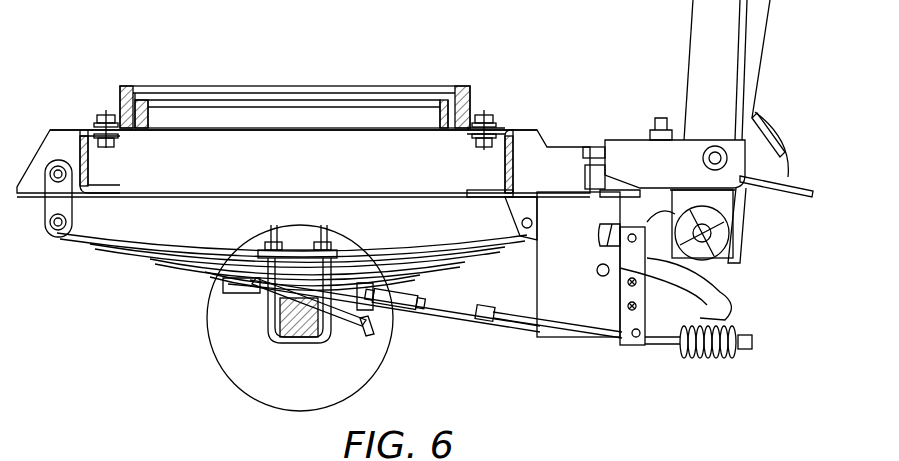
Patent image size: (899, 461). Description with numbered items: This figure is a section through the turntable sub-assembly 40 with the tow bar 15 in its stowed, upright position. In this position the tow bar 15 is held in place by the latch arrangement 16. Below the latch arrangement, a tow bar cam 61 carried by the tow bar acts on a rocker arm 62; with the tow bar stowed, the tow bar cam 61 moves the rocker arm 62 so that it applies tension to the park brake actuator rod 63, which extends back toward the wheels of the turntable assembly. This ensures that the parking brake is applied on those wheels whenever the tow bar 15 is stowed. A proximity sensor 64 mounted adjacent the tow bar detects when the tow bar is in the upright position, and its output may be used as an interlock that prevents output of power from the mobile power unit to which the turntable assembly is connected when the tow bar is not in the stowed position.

The turntable sub-assembly 40 is at (84, 47).
The tow bar 15 is at (689, 40).
The latch arrangement 16 is at (630, 140).
The proximity sensor 64 is at (600, 240).
The tow bar cam 61 is at (622, 291).
The park brake actuator rod 63 is at (592, 343).
The rocker arm 62 is at (633, 348).